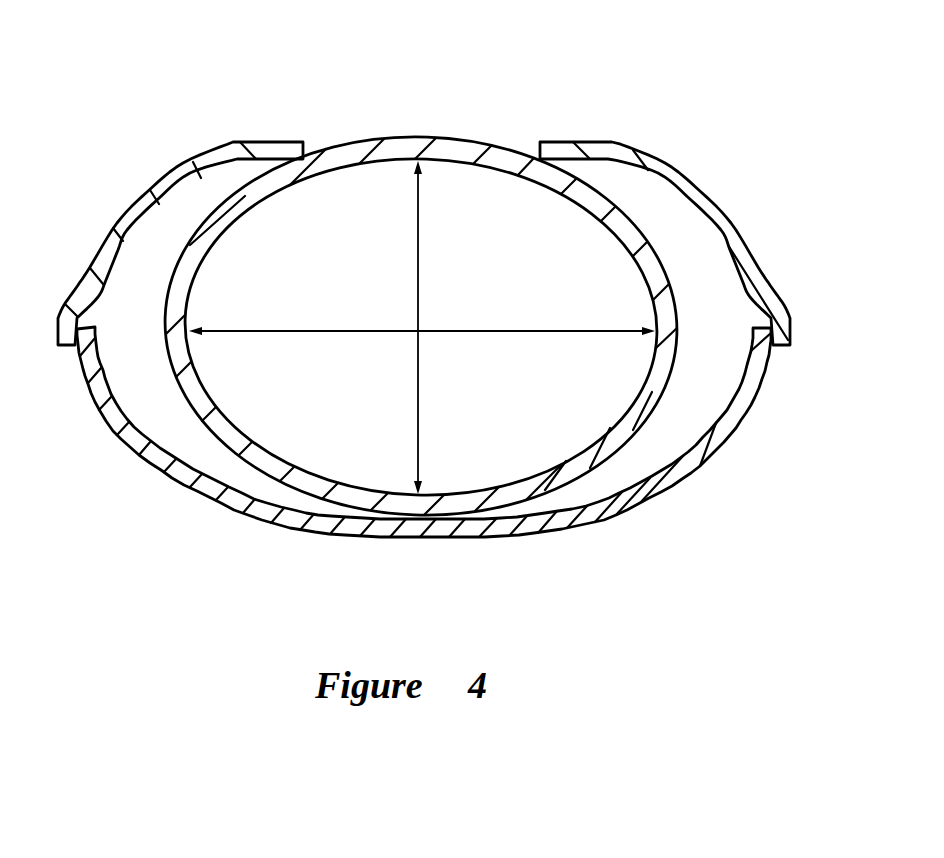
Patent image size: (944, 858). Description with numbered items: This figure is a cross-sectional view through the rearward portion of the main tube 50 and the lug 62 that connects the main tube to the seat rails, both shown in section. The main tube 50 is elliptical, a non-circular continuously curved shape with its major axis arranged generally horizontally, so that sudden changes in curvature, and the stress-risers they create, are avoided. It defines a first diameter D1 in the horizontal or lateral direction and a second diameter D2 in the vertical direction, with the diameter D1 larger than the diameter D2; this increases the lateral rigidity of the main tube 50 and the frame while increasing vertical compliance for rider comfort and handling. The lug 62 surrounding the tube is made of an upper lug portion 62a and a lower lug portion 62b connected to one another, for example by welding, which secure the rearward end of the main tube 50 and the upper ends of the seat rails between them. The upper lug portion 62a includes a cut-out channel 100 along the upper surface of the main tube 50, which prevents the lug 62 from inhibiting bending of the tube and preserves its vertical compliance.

The channel 100 is at (308, 150).
The main tube 50 is at (460, 141).
The lug 62 is at (762, 251).
The upper lug portion 62a is at (712, 199).
The lower lug portion 62b is at (707, 462).
The first diameter D1 is at (530, 331).
The second diameter D2 is at (418, 243).